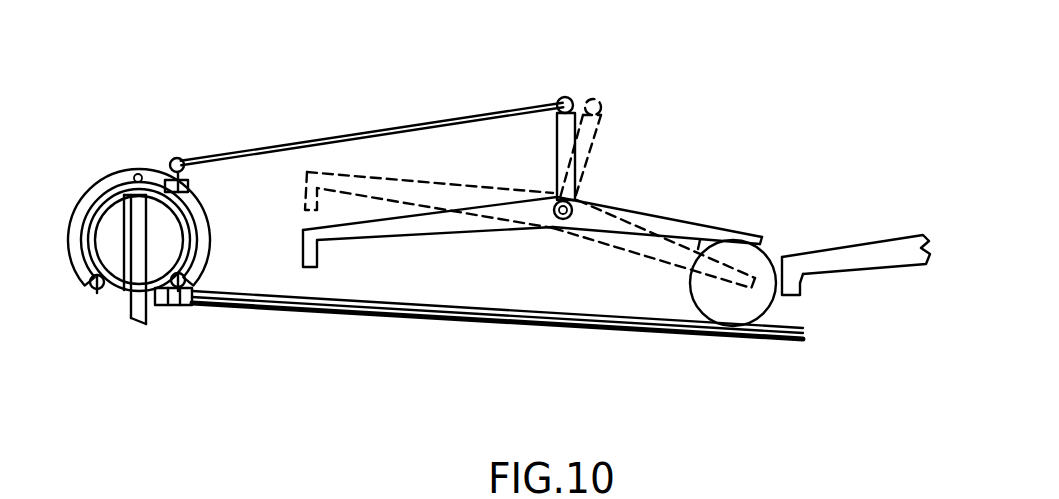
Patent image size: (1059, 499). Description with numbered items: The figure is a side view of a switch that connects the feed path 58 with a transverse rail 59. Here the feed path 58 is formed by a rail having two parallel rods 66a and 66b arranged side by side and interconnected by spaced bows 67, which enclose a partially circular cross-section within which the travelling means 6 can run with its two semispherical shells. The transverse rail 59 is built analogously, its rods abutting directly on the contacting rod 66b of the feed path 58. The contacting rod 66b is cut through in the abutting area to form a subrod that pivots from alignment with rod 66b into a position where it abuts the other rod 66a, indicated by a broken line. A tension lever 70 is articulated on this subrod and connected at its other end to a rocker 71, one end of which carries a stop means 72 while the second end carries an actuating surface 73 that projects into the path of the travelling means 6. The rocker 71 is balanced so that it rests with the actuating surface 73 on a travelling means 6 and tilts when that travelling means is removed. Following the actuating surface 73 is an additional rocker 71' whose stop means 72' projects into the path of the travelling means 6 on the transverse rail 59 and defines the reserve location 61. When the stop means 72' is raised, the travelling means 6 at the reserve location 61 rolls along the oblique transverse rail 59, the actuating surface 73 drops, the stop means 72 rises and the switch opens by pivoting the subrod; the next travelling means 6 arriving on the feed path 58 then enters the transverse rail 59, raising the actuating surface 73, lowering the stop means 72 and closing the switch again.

The travelling means 6 is at (744, 256).
The feed path 58 is at (138, 350).
The transverse rail 59 is at (472, 315).
The reserve location 61 is at (702, 350).
The rod 66a is at (100, 290).
The contacting rod 66b is at (182, 300).
The bows 67 is at (104, 182).
The tension lever 70 is at (431, 125).
The rocker 71 is at (651, 131).
The additional rocker 71' is at (856, 331).
The stop means 72 is at (430, 287).
The stop means 72' is at (847, 169).
The actuating surface 73 is at (690, 243).